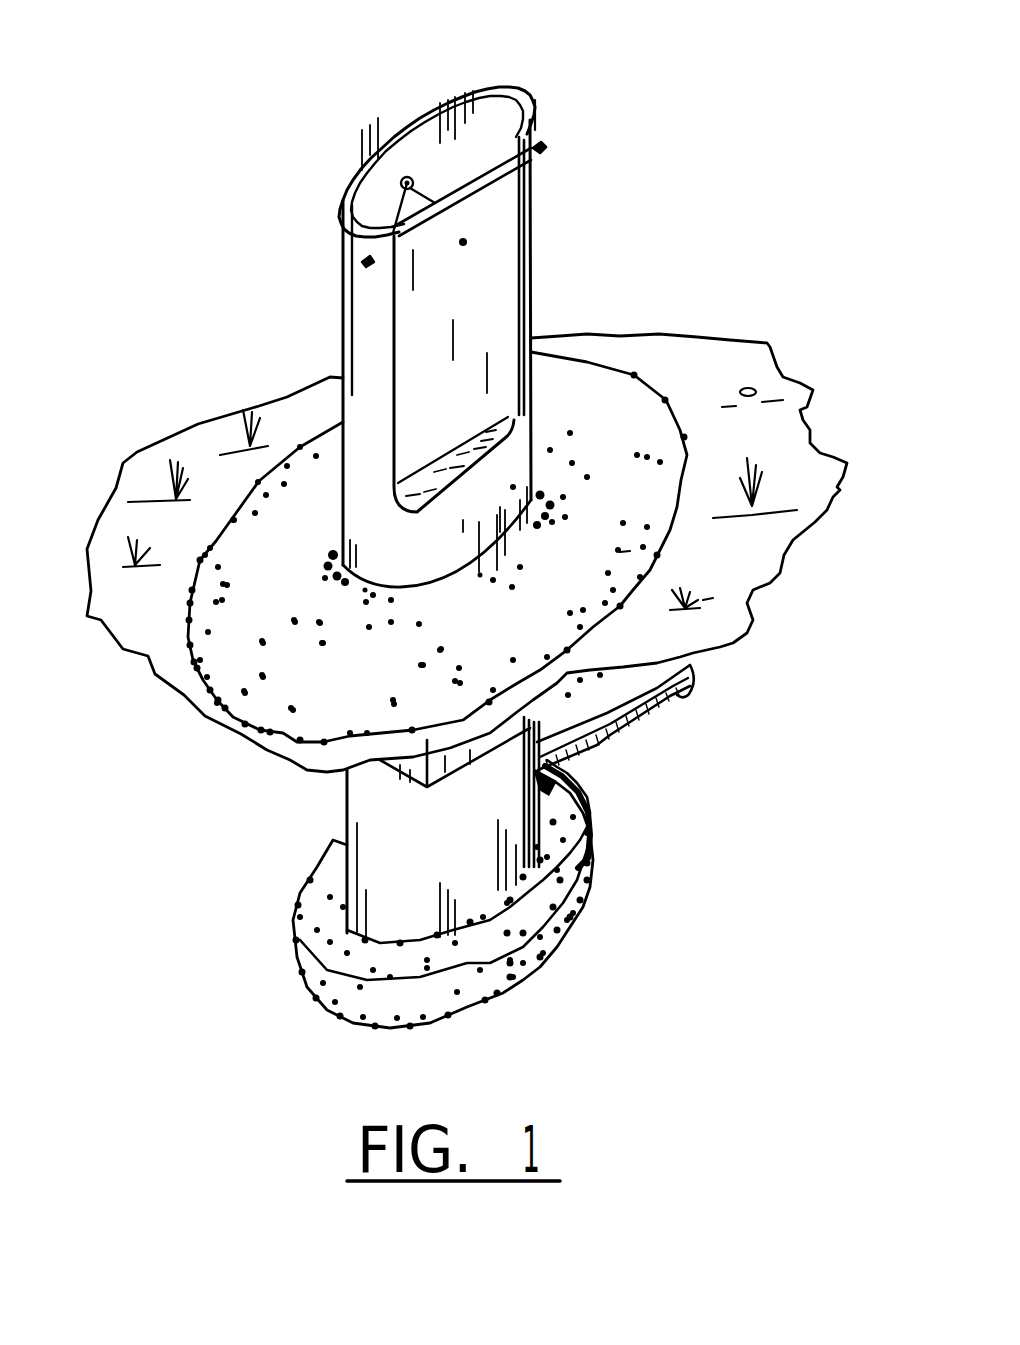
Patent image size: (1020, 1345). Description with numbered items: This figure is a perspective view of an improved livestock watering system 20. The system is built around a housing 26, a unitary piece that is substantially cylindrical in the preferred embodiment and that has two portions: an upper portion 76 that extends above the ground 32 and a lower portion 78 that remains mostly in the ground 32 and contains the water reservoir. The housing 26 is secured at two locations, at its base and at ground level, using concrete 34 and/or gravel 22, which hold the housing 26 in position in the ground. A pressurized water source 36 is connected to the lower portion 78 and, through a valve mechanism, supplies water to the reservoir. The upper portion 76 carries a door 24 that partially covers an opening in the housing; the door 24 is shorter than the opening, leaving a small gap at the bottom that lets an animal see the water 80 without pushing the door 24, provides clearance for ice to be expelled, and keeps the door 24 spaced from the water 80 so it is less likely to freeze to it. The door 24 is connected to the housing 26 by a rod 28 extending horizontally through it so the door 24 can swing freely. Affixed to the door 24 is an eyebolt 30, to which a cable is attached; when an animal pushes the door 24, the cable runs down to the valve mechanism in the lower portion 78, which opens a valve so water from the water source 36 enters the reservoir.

The livestock watering system 20 is at (609, 125).
The gravel 22 is at (603, 373).
The door 24 is at (497, 238).
The housing 26 is at (363, 322).
The rod 28 is at (343, 243).
The eyebolt 30 is at (407, 177).
The ground 32 is at (790, 443).
The concrete 34 is at (573, 673).
The pressurized water source 36 is at (663, 705).
The upper portion 76 is at (270, 188).
The lower portion 78 is at (270, 868).
The water 80 is at (505, 458).